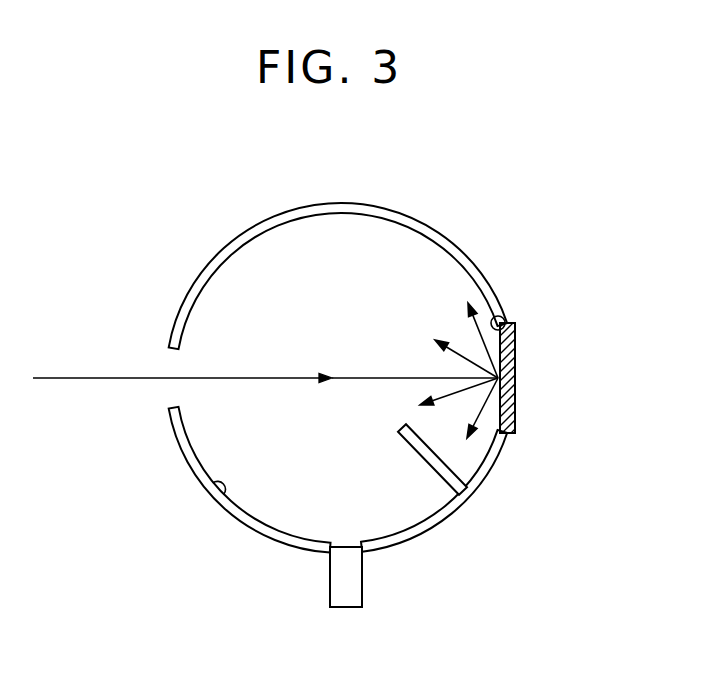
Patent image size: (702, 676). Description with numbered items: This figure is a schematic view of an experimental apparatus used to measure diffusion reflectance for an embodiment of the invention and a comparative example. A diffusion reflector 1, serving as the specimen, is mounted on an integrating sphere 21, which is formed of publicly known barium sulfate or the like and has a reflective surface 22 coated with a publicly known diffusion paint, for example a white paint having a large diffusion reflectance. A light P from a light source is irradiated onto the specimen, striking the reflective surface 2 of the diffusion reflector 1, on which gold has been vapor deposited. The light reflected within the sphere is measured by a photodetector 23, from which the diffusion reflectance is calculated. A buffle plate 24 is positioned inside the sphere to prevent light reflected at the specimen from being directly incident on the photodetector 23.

The diffusion reflector 1 is at (515, 409).
The reflective surface 2 is at (503, 318).
The integrating sphere 21 is at (442, 230).
The reflective surface 22 is at (222, 500).
The photodetector 23 is at (362, 597).
The buffle plate 24 is at (438, 472).
The light P is at (108, 378).